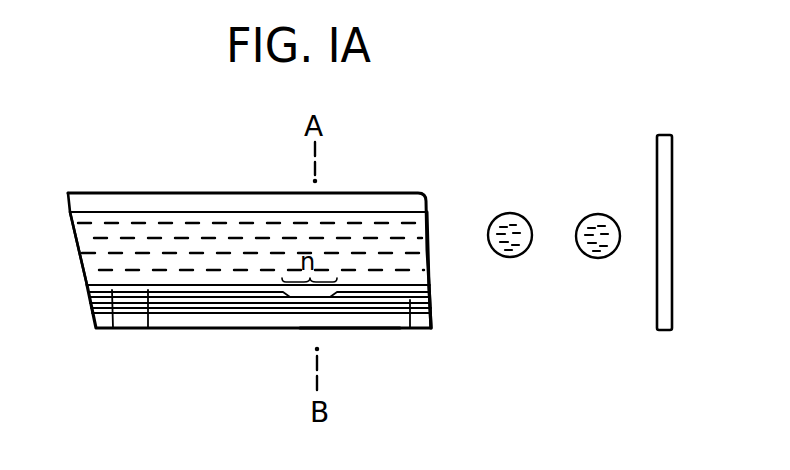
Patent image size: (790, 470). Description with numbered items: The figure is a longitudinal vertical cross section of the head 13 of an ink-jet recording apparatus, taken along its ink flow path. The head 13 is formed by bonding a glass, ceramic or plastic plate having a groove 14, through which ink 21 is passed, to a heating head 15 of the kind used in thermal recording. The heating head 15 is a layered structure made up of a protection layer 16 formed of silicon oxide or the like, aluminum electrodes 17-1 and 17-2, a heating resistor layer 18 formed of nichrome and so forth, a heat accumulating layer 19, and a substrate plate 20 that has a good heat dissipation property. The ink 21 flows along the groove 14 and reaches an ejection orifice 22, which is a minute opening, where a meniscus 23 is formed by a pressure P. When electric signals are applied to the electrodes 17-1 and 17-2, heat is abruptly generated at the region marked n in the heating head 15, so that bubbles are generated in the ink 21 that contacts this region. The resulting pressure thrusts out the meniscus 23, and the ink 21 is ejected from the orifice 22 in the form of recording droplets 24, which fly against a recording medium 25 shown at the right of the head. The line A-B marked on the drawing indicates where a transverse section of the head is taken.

The head 13 is at (170, 192).
The groove 14 is at (238, 195).
The heating head 15 is at (68, 278).
The protection layer 16 is at (113, 328).
The aluminum electrode 17-1 is at (148, 328).
The aluminum electrode 17-2 is at (410, 326).
The heating resistor layer 18 is at (227, 303).
The heat accumulating layer 19 is at (270, 308).
The substrate plate 20 is at (352, 318).
The ink 21 is at (96, 215).
The ejection orifice 22 is at (429, 285).
The meniscus 23 is at (427, 248).
The recording droplets 24 is at (622, 203).
The recording medium 25 is at (663, 170).